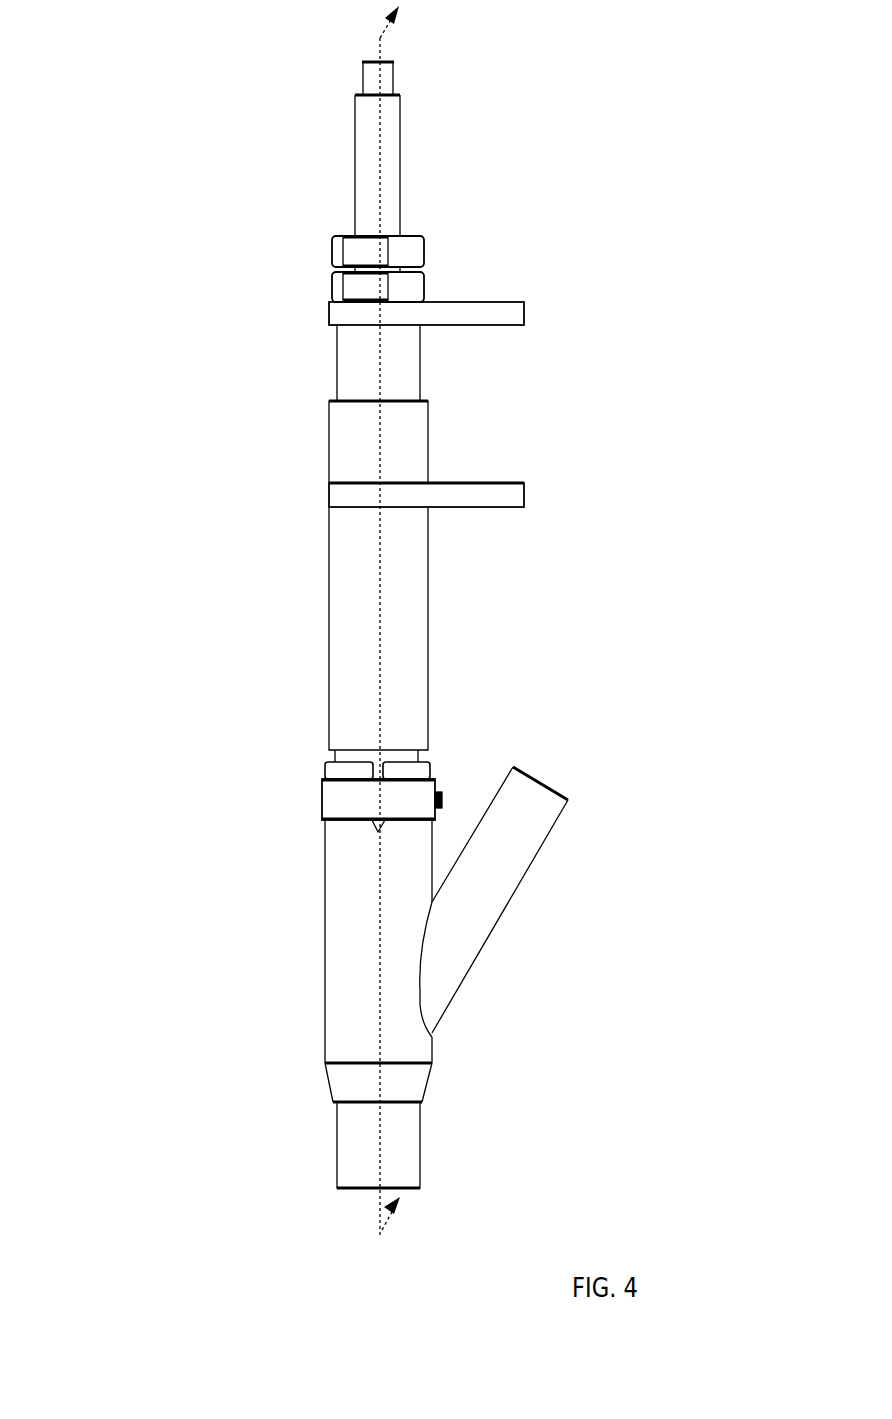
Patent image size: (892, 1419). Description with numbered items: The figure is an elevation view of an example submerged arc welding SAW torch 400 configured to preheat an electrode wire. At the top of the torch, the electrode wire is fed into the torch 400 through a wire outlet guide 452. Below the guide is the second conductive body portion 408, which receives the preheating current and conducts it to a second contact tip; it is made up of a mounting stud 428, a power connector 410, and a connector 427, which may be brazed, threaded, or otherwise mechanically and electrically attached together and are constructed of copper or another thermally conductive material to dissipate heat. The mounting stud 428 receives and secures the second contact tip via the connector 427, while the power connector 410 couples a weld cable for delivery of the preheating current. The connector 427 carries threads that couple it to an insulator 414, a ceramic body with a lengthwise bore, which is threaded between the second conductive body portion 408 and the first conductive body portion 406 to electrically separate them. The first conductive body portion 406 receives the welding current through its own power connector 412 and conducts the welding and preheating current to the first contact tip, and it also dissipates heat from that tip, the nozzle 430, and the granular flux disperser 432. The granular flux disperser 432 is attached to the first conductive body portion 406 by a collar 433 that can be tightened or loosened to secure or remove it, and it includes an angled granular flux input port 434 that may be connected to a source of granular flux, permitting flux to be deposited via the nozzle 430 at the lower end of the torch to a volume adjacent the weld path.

The SAW torch 400 is at (166, 67).
The second conductive body portion 408 is at (296, 190).
The wire outlet guide 452 is at (394, 73).
The mounting stud 428 is at (400, 147).
The power connector 410 is at (512, 307).
The connector 427 is at (418, 372).
The insulator 414 is at (415, 440).
The power connector 412 is at (515, 482).
The first conductive body portion 406 is at (423, 562).
The collar 433 is at (325, 803).
The granular flux disperser 432 is at (332, 888).
The granular flux input port 434 is at (553, 783).
The nozzle 430 is at (342, 1140).